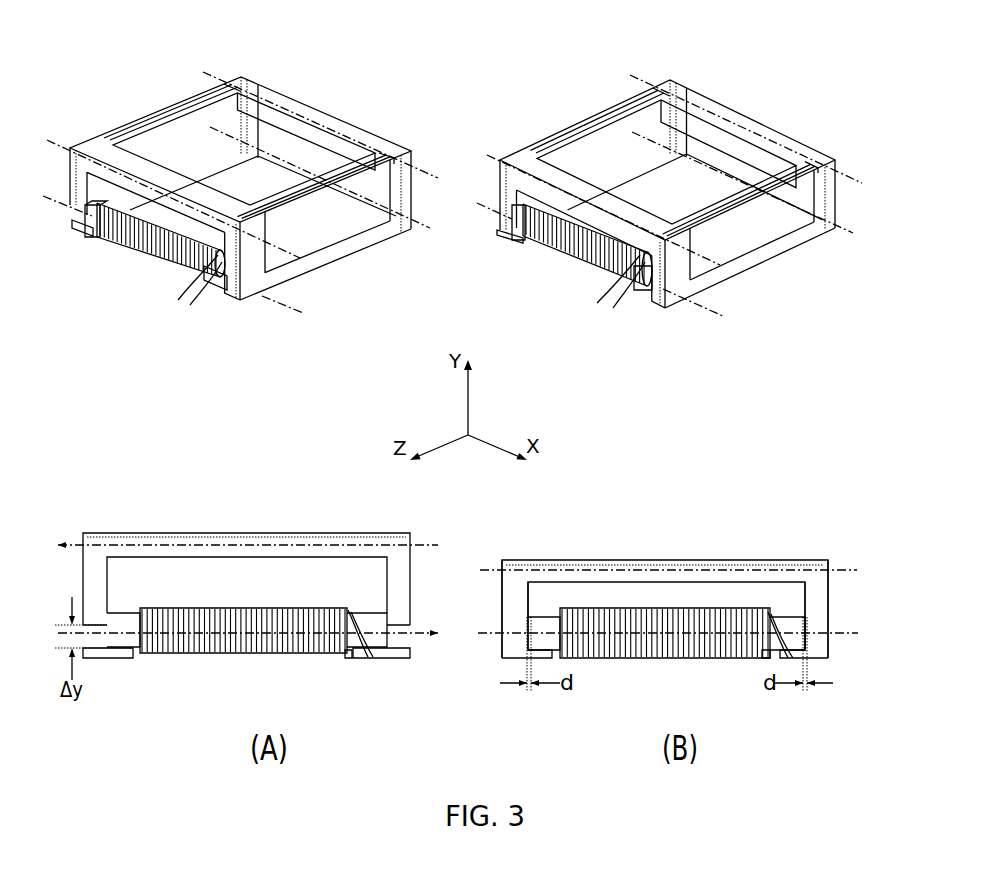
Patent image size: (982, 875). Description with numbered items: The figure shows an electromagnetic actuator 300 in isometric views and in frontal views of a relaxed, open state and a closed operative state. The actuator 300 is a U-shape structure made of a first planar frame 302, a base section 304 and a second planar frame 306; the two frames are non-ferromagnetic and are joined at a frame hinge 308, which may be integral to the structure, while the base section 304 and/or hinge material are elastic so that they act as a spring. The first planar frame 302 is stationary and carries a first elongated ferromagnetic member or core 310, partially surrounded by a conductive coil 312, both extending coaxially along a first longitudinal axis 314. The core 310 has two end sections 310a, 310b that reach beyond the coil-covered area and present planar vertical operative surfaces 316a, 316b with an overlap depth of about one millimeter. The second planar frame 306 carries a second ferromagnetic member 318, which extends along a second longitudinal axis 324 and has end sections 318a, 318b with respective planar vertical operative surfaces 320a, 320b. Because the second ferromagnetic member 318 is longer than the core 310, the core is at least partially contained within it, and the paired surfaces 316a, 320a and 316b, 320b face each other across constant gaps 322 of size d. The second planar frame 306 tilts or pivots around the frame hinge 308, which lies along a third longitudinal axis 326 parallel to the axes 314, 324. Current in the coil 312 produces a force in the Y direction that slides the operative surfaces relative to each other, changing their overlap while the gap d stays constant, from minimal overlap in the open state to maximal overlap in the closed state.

The EM actuator 300 is at (452, 25).
The first planar frame 302 is at (762, 271).
The base section 304 is at (833, 216).
The second planar frame 306 is at (783, 183).
The frame hinge 308 is at (818, 155).
The first elongated ferromagnetic member 310 is at (213, 655).
The end section 310a is at (90, 235).
The end section 310b is at (217, 290).
The conductive coil 312 is at (327, 657).
The first longitudinal axis 314 is at (414, 633).
The planar vertical operative surface 316a is at (528, 617).
The planar vertical operative surface 316b is at (803, 617).
The second ferromagnetic member 318 is at (643, 568).
The end section 318a is at (73, 157).
The end section 318b is at (260, 262).
The planar vertical operative surface 320a is at (527, 617).
The planar vertical operative surface 320b is at (807, 617).
The gaps 322 is at (110, 612).
The second longitudinal axis 324 is at (73, 541).
The third longitudinal axis 326 is at (303, 118).